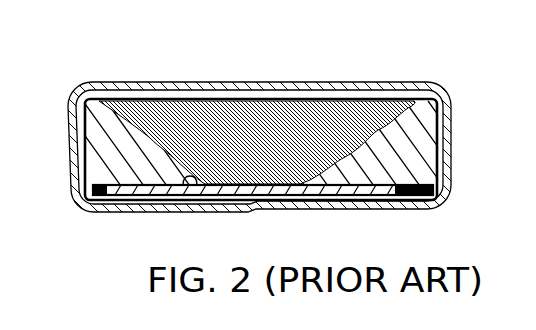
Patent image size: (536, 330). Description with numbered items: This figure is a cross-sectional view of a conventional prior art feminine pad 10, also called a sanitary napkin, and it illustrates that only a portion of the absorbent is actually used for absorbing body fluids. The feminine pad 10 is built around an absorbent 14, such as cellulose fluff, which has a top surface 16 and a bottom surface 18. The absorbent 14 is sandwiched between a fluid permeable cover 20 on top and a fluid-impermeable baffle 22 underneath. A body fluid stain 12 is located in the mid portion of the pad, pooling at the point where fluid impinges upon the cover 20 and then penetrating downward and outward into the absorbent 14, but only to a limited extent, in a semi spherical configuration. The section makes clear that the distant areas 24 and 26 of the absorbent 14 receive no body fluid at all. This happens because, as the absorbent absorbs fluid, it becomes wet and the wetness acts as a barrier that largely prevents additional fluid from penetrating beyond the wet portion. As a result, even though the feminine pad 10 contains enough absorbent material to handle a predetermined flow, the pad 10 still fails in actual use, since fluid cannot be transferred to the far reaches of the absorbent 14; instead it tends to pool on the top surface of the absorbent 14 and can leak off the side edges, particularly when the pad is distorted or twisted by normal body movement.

The feminine pad 10 is at (62, 79).
The body fluid stain 12 is at (135, 110).
The absorbent 14 is at (429, 125).
The top surface 16 is at (202, 100).
The bottom surface 18 is at (192, 179).
The fluid permeable cover 20 is at (348, 83).
The fluid-impermeable baffle 22 is at (395, 198).
The distant area 24 is at (104, 162).
The distant area 26 is at (418, 164).